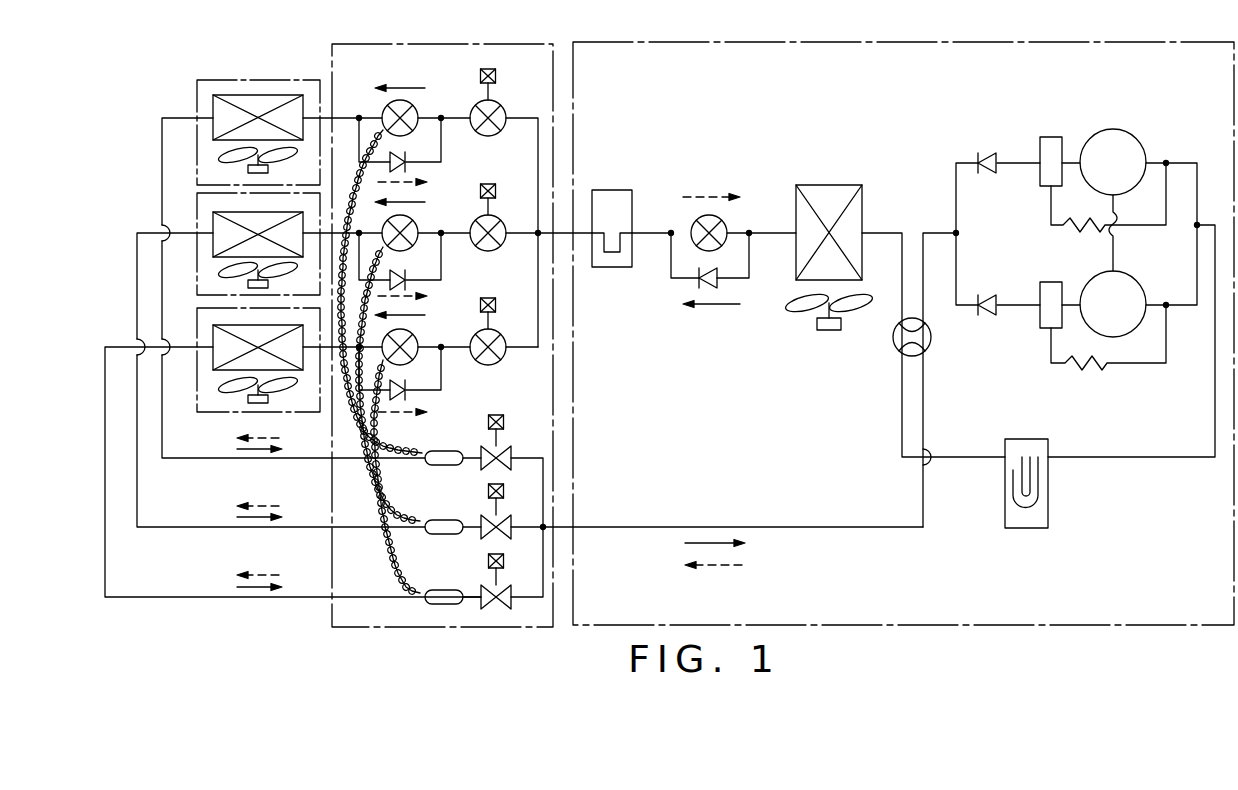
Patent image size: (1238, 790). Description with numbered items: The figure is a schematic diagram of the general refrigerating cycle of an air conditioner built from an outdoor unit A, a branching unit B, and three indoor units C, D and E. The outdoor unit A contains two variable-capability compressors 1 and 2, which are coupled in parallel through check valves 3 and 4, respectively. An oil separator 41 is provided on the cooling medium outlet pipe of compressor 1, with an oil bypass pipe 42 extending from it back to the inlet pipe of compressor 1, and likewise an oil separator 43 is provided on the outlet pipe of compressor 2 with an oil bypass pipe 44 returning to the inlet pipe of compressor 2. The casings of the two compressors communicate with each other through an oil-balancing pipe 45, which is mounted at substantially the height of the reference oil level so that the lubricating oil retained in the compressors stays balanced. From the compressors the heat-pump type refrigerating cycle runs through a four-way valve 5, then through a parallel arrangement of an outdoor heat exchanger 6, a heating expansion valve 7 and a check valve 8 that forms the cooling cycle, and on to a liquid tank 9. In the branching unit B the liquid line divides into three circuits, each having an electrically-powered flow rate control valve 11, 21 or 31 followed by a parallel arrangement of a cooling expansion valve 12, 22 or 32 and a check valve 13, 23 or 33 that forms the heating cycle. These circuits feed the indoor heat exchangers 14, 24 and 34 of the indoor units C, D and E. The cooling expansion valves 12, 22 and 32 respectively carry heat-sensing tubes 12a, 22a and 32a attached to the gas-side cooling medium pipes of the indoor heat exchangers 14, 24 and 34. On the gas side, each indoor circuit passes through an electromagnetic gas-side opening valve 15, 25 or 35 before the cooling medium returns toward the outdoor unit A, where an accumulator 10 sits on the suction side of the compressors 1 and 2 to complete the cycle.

The outdoor unit A is at (851, 42).
The branching unit B is at (428, 44).
The indoor unit C is at (197, 106).
The indoor unit D is at (197, 222).
The indoor unit E is at (197, 340).
The variable-capability compressor 1 is at (1113, 129).
The variable-capability compressor 2 is at (1143, 292).
The check valve 3 is at (988, 155).
The check valve 4 is at (988, 298).
The four-way valve 5 is at (929, 345).
The outdoor heat exchanger 6 is at (829, 185).
The heating expansion valve 7 is at (724, 221).
The check valve 8 is at (697, 285).
The liquid tank 9 is at (610, 190).
The accumulator 10 is at (1030, 439).
The electrically-powered flow rate control valve 11 is at (501, 105).
The cooling expansion valve 12 is at (413, 106).
The check valve 13 is at (400, 150).
The indoor heat exchanger 14 is at (213, 139).
The gas-side opening valve 15 is at (505, 447).
The electrically-powered flow rate control valve 21 is at (501, 220).
The cooling expansion valve 22 is at (413, 222).
The check valve 23 is at (410, 285).
The indoor heat exchanger 24 is at (213, 256).
The gas-side opening valve 25 is at (505, 516).
The electrically-powered flow rate control valve 31 is at (501, 334).
The cooling expansion valve 32 is at (413, 336).
The check valve 33 is at (410, 396).
The indoor heat exchanger 34 is at (213, 369).
The gas-side opening valve 35 is at (505, 586).
The heat-sensing tube 12a is at (442, 451).
The heat-sensing tube 22a is at (442, 520).
The heat-sensing tube 32a is at (442, 590).
The oil separator 41 is at (1050, 137).
The oil bypass pipe 42 is at (1147, 226).
The oil separator 43 is at (1040, 328).
The oil bypass pipe 44 is at (1138, 363).
The oil-balancing pipe 45 is at (1110, 254).